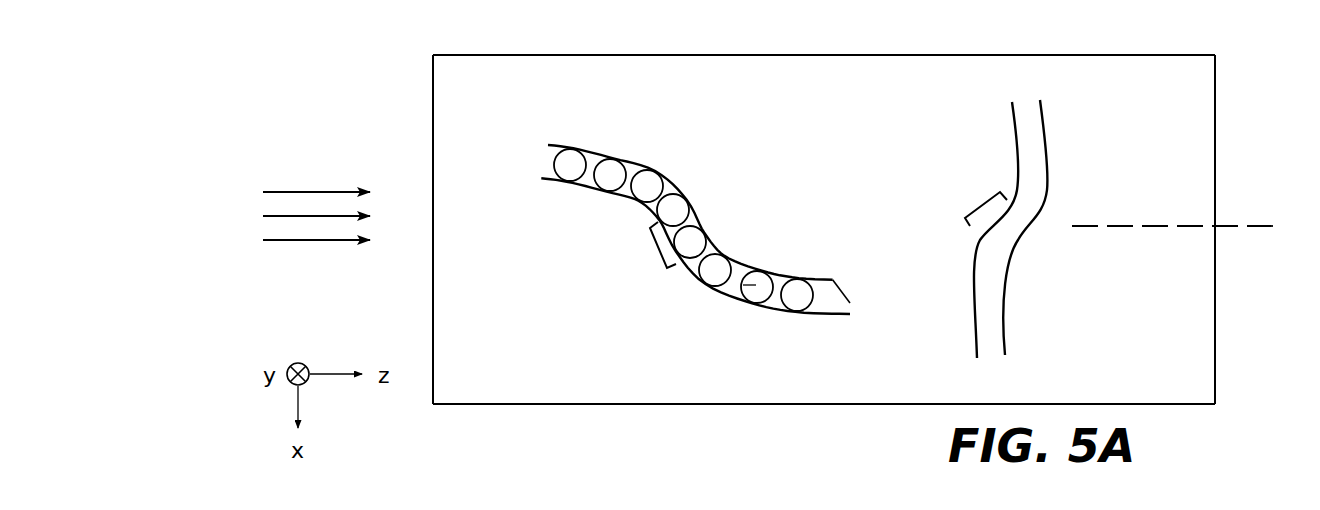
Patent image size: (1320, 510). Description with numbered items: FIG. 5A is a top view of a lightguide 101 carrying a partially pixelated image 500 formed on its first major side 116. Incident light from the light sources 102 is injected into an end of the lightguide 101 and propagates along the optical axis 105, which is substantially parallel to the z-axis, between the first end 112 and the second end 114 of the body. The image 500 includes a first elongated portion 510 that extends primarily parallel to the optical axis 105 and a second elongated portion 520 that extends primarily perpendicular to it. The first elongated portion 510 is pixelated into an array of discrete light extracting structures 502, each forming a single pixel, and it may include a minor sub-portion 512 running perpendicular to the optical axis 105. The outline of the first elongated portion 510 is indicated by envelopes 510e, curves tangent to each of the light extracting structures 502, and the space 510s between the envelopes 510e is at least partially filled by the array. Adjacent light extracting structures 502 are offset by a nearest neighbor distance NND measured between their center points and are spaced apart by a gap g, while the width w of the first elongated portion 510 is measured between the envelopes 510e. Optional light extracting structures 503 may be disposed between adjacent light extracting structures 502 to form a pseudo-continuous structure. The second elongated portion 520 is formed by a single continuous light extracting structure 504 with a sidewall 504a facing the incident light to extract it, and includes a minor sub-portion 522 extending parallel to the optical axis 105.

The lightguide 101 is at (348, 146).
The light sources 102 is at (313, 244).
The first end 112 is at (433, 120).
The second end 114 is at (1216, 107).
The first major side 116 is at (1178, 135).
The optical axis 105 is at (1236, 224).
The image 500 is at (699, 268).
The light extracting structures 502 is at (648, 180).
The optional light extracting structures 503 is at (782, 277).
The continuous light extracting structure 504 is at (1038, 141).
The sidewall 504a is at (973, 300).
The first elongated portion 510 is at (722, 146).
The space 510s is at (526, 160).
The envelopes 510e is at (878, 303).
The minor sub-portion 512 is at (661, 248).
The second elongated portion 520 is at (1006, 216).
The minor sub-portion 522 is at (981, 206).
The gap g is at (752, 284).
The width w is at (802, 326).
The nearest neighbor distance NND is at (730, 290).